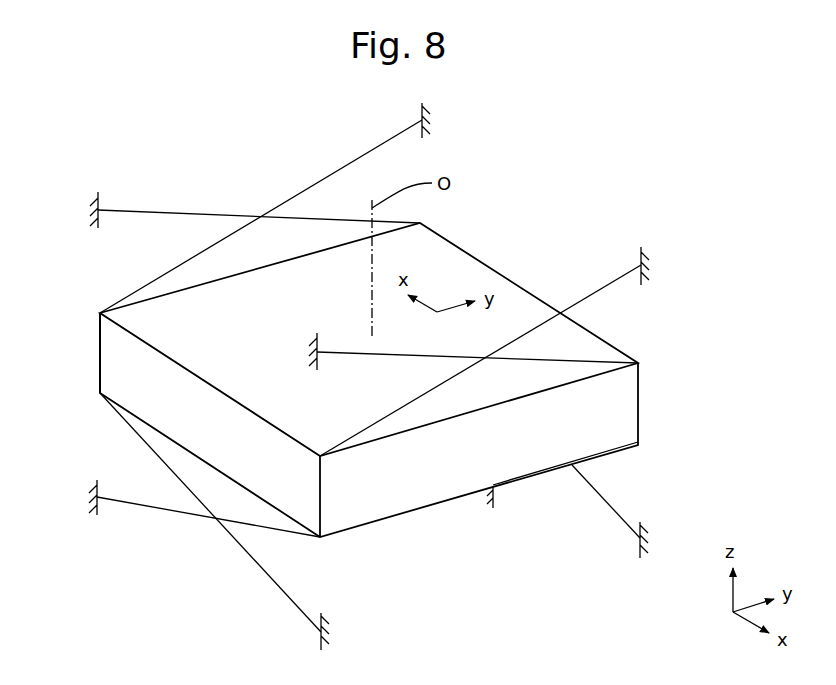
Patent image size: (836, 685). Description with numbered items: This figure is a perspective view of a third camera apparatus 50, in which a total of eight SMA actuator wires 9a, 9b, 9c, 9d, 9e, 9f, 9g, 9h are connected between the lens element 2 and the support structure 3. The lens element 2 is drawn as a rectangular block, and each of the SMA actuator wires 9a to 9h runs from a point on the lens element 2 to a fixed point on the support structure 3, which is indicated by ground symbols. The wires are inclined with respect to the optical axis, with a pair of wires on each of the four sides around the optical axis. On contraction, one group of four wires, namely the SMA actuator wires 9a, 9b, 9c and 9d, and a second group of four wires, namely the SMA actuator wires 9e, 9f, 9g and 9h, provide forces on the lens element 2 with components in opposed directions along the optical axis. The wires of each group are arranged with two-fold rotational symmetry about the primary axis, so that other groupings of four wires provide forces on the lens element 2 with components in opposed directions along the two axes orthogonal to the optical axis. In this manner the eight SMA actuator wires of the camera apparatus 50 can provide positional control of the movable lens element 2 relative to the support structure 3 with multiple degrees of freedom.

The lens element 2 is at (577, 343).
The support structure 3 is at (95, 208).
The third camera apparatus 50 is at (92, 346).
The SMA actuator wire 9a is at (184, 209).
The SMA actuator wire 9b is at (348, 160).
The SMA actuator wire 9c is at (386, 357).
The SMA actuator wire 9d is at (600, 283).
The SMA actuator wire 9e is at (262, 585).
The SMA actuator wire 9f is at (147, 507).
The SMA actuator wire 9g is at (605, 500).
The SMA actuator wire 9h is at (530, 483).